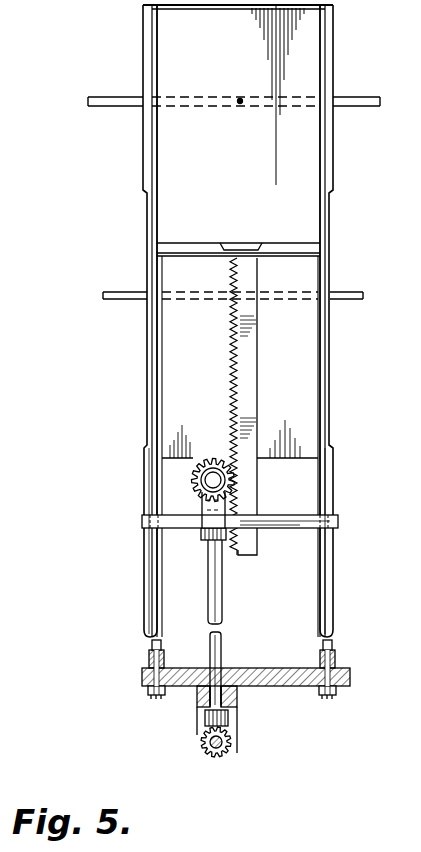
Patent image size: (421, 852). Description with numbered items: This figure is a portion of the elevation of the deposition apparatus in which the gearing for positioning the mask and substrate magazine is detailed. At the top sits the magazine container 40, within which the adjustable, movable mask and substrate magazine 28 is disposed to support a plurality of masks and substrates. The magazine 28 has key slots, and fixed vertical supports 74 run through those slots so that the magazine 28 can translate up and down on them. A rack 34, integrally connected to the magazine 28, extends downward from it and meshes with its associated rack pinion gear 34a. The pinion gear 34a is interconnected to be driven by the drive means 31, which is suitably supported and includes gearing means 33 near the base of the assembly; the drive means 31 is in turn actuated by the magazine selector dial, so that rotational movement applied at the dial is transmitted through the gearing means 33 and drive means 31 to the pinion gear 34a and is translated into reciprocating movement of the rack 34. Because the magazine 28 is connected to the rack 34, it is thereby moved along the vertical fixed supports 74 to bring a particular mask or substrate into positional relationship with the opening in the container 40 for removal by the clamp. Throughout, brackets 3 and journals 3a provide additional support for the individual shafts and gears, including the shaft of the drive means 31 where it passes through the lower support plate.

The magazine container 40 is at (336, 40).
The mask and substrate magazine 28 is at (200, 126).
The rack 34 is at (257, 358).
The rack pinion gear 34a is at (212, 458).
The bracket 3 is at (197, 494).
The fixed vertical supports 74 is at (147, 578).
The drive means 31 is at (222, 602).
The journal 3a is at (237, 706).
The gearing means 33 is at (225, 755).